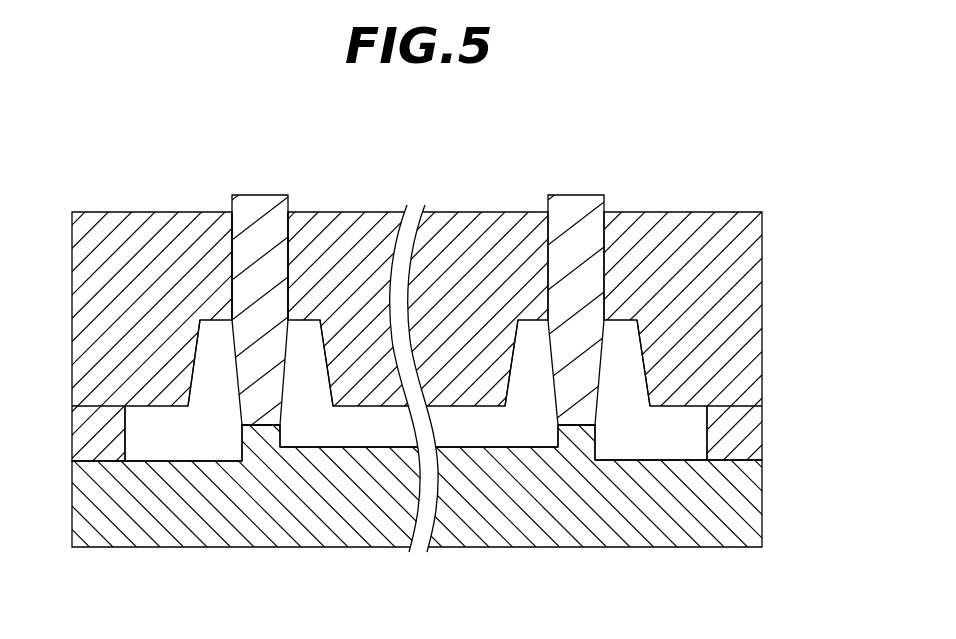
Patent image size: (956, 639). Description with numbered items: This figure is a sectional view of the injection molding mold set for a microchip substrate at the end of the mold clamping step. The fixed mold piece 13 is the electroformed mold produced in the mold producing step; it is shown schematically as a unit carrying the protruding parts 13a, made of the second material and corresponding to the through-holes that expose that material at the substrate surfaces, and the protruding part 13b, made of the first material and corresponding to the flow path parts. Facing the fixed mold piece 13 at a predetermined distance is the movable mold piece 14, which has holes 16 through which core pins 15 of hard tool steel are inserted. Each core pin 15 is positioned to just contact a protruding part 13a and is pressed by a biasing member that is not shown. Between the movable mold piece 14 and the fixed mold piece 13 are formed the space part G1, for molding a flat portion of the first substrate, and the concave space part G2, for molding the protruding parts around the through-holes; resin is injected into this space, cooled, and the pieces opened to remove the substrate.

The electroformed mold 13 is at (752, 503).
The protruding parts 13a is at (265, 440).
The protruding part 13b is at (483, 453).
The movable mold piece 14 is at (748, 288).
The core pin 15 is at (252, 213).
The through-hole for core pin 16 is at (226, 200).
The space part G1 is at (177, 443).
The concave space part G2 is at (213, 367).